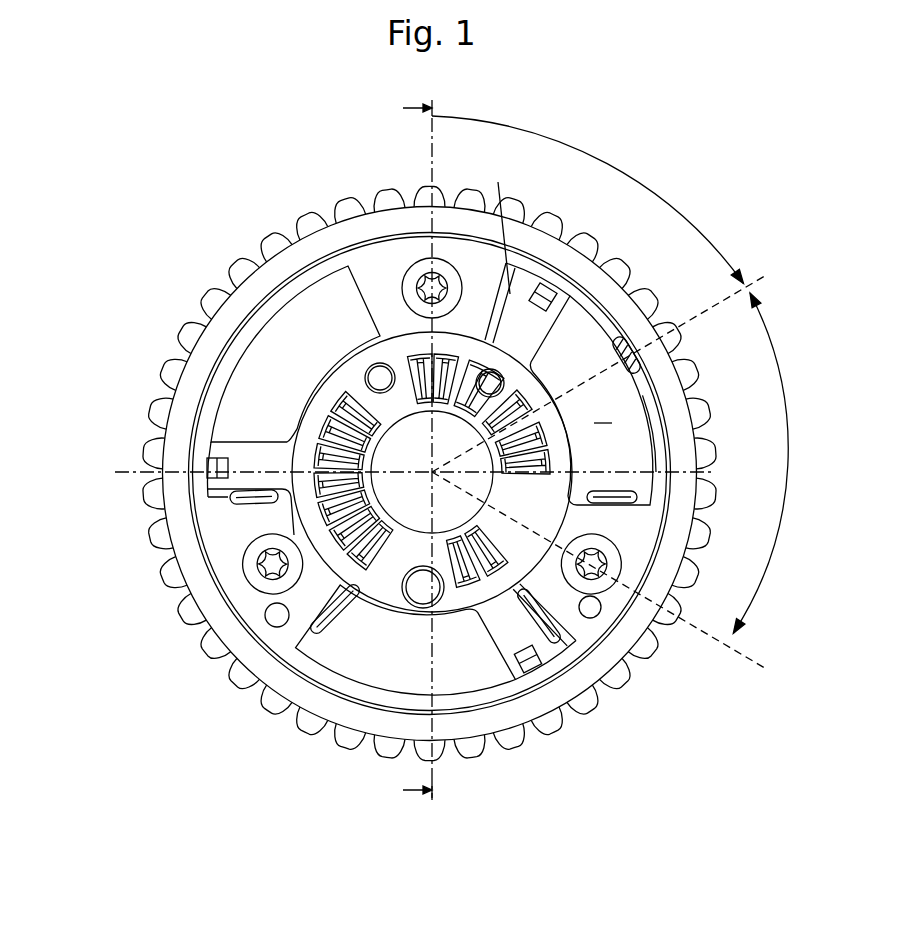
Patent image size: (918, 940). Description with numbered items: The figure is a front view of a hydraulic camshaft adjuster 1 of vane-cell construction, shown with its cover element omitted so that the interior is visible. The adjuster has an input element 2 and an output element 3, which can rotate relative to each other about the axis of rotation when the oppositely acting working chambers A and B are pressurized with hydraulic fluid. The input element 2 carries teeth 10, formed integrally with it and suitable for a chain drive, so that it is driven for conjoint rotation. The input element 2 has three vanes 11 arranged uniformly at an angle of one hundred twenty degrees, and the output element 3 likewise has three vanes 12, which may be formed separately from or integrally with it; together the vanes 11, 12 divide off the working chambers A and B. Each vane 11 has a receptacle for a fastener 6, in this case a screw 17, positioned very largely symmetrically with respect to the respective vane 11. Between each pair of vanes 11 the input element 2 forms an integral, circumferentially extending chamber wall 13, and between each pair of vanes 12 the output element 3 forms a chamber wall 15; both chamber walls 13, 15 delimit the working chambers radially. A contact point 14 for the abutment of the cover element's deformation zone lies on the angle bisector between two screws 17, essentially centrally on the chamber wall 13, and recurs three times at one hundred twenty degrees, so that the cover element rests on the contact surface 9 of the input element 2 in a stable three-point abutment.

The camshaft adjuster 1 is at (200, 190).
The input element 2 is at (320, 248).
The output element 3 is at (355, 380).
The fastener 6 is at (590, 588).
The contact surface 9 is at (605, 325).
The teeth 10 is at (210, 462).
The vanes 11 is at (472, 290).
The vanes 12 is at (521, 322).
The chamber wall 13 is at (650, 428).
The contact point 14 is at (643, 368).
The chamber wall 15 is at (557, 437).
The screw 17 is at (416, 284).